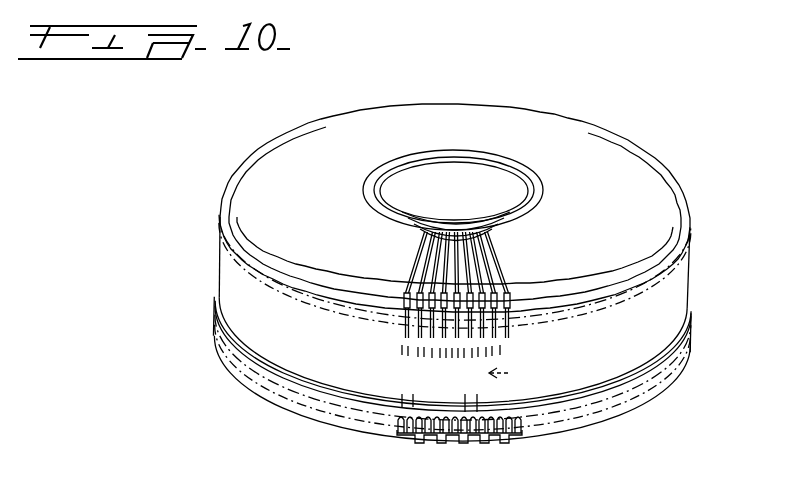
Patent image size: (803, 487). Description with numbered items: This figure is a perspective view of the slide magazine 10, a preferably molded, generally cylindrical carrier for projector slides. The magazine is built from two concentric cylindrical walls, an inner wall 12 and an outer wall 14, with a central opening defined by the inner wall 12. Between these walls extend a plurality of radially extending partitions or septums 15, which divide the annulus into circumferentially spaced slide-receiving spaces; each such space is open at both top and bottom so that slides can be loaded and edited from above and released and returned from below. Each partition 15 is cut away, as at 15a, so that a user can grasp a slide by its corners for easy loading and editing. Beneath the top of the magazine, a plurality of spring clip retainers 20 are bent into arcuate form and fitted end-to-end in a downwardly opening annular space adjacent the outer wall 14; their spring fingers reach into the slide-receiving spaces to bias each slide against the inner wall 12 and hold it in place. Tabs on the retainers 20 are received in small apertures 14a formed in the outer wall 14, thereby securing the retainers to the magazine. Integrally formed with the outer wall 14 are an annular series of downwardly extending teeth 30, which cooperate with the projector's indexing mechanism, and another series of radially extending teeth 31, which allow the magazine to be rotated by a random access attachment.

The slide magazine 10 is at (210, 198).
The inner cylindrical wall 12 is at (490, 185).
The outer cylindrical wall 14 is at (678, 298).
The apertures 14a is at (467, 415).
The partitions 15 is at (413, 268).
The cut-away portion of partition 15a is at (405, 308).
The spring clip retainers 20 is at (454, 296).
The downwardly extending teeth 30 is at (488, 445).
The radially extending teeth 31 is at (398, 417).